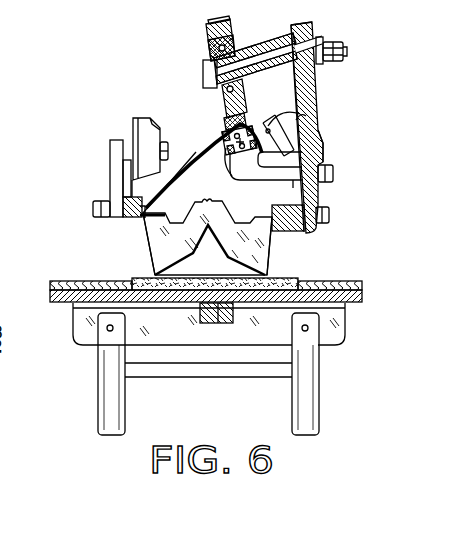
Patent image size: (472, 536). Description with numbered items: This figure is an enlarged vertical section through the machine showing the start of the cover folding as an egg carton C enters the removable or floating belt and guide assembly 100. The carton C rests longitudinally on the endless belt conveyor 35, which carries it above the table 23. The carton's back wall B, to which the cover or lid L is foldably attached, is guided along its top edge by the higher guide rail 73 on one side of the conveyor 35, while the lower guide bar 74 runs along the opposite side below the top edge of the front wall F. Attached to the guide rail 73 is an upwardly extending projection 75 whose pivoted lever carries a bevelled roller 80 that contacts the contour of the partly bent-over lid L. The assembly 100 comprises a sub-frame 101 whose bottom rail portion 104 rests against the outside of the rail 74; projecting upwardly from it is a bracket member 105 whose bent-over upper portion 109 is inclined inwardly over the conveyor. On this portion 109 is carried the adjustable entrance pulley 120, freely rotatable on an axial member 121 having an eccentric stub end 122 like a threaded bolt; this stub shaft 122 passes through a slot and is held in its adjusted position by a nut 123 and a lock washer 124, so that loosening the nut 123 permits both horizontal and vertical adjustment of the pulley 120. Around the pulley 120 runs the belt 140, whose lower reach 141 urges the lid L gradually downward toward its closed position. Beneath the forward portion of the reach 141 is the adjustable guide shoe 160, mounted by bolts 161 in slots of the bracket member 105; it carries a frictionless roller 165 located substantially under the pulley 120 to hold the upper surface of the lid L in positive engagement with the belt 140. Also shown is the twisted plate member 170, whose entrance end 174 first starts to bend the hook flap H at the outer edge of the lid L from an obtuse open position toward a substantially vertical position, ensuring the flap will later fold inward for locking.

The table 23 is at (353, 302).
The endless belt conveyor 35 is at (292, 278).
The carton C is at (140, 255).
The back wall B is at (143, 225).
The front wall F is at (270, 250).
The bottom rail portion 104 is at (313, 224).
The upwardly extending projection 75 is at (118, 142).
The higher guide rail 73 is at (134, 196).
The roller 80 is at (150, 130).
The lid L is at (196, 140).
The lower guide bar 74 is at (289, 182).
The frictionless roller 165 is at (230, 168).
The twisted plate member 170 is at (288, 115).
The hook flap H is at (265, 129).
The adjustable guide shoe 160 is at (217, 167).
The lower reach 141 is at (222, 117).
The pulley 120 is at (206, 44).
The belt 140 is at (222, 24).
The axial member 121 is at (276, 28).
The bracket member 105 is at (313, 128).
The sub-frame 101 is at (333, 152).
The entrance end 174 is at (299, 122).
The bent-over upper portion 109 is at (312, 23).
The removable belt and guide assembly 100 is at (336, 94).
The bolt 161 is at (333, 173).
The eccentric stub end 122 is at (343, 52).
The nut 123 is at (328, 40).
The lock washer 124 is at (322, 63).